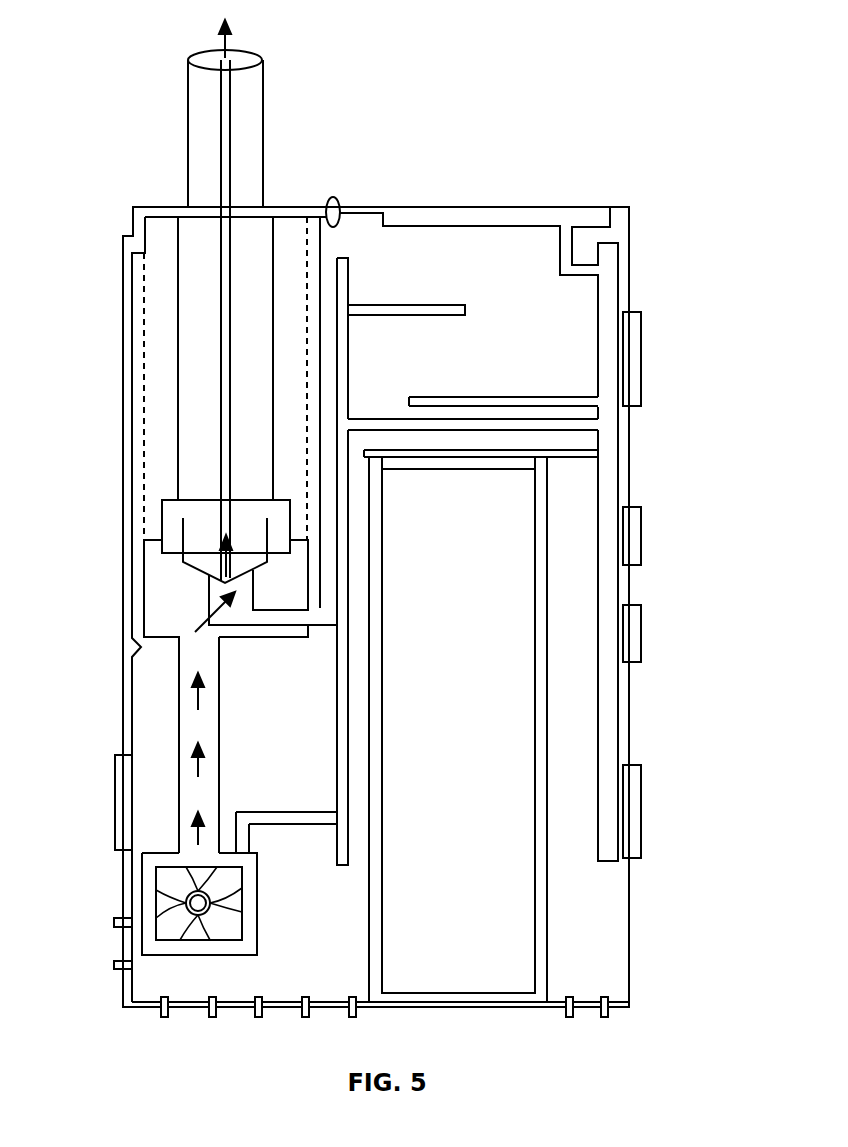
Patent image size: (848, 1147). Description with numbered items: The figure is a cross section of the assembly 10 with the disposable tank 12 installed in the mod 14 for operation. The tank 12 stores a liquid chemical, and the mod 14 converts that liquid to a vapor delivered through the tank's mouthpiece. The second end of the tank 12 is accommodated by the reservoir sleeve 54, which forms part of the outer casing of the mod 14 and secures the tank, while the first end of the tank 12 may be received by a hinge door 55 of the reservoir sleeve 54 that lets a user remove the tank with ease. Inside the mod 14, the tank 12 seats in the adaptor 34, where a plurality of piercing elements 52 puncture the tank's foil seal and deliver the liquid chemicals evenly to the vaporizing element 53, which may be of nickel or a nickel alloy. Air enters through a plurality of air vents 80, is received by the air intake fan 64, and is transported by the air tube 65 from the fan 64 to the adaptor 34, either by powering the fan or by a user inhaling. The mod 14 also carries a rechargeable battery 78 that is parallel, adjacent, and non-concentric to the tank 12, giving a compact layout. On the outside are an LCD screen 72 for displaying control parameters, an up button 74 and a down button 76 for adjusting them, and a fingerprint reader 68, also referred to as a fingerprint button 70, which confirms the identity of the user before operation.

The assembly 10 is at (615, 112).
The disposable tank 12 is at (265, 160).
The mod 14 is at (629, 461).
The adaptor 34 is at (144, 583).
The piercing elements 52 is at (183, 537).
The vaporizing element 53 is at (209, 597).
The reservoir sleeve 54 is at (123, 372).
The hinge door 55 is at (153, 205).
The air intake fan 64 is at (163, 918).
The air tube 65 is at (179, 716).
The fingerprint reader 68 is at (641, 820).
The fingerprint button 70 is at (641, 358).
The LCD screen 72 is at (556, 206).
The first button 74 is at (641, 537).
The second button 76 is at (641, 633).
The rechargeable battery 78 is at (548, 395).
The air vents 80 is at (212, 1017).